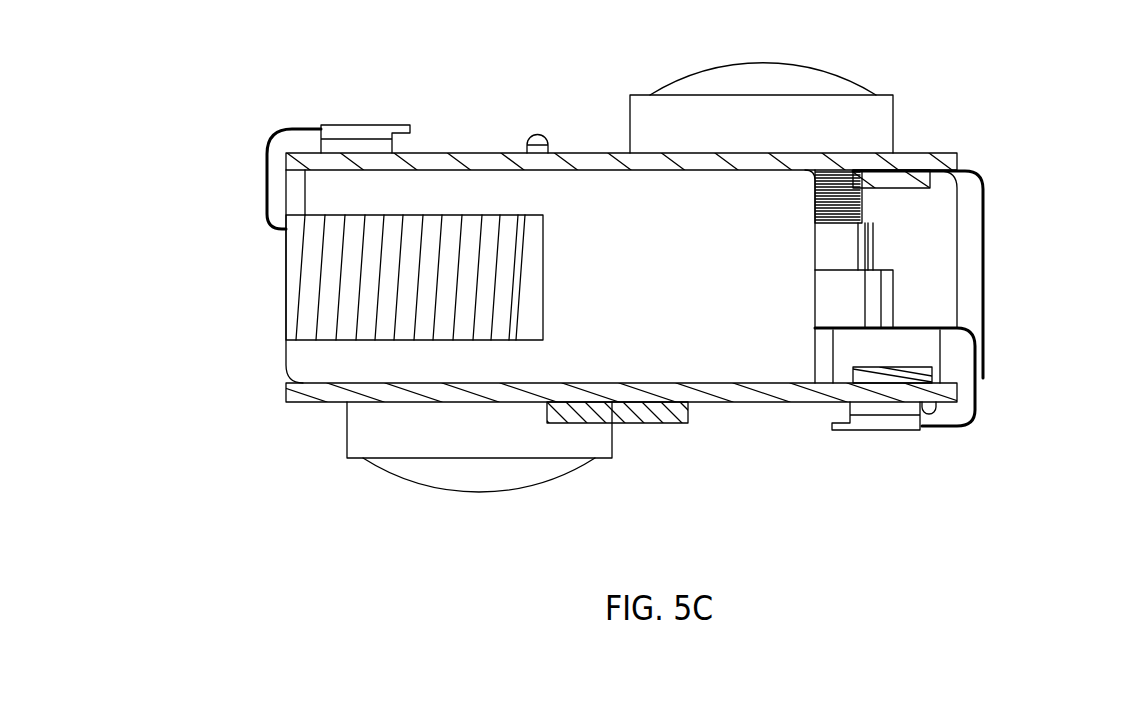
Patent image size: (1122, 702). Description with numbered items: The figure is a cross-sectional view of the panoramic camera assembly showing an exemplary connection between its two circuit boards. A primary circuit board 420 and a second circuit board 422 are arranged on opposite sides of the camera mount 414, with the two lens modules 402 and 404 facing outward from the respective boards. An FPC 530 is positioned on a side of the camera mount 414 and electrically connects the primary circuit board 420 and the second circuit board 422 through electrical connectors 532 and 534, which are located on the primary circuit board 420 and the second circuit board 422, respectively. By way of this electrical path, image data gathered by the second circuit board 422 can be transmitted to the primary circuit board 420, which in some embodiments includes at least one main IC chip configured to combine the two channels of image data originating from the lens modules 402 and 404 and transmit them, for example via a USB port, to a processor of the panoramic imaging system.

The lens module 402 is at (713, 116).
The lens module 404 is at (468, 423).
The camera mount 414 is at (372, 363).
The primary circuit board 420 is at (917, 163).
The second circuit board 422 is at (790, 395).
The FPC 530 is at (985, 270).
The electrical connector 532 is at (950, 165).
The electrical connector 534 is at (925, 375).